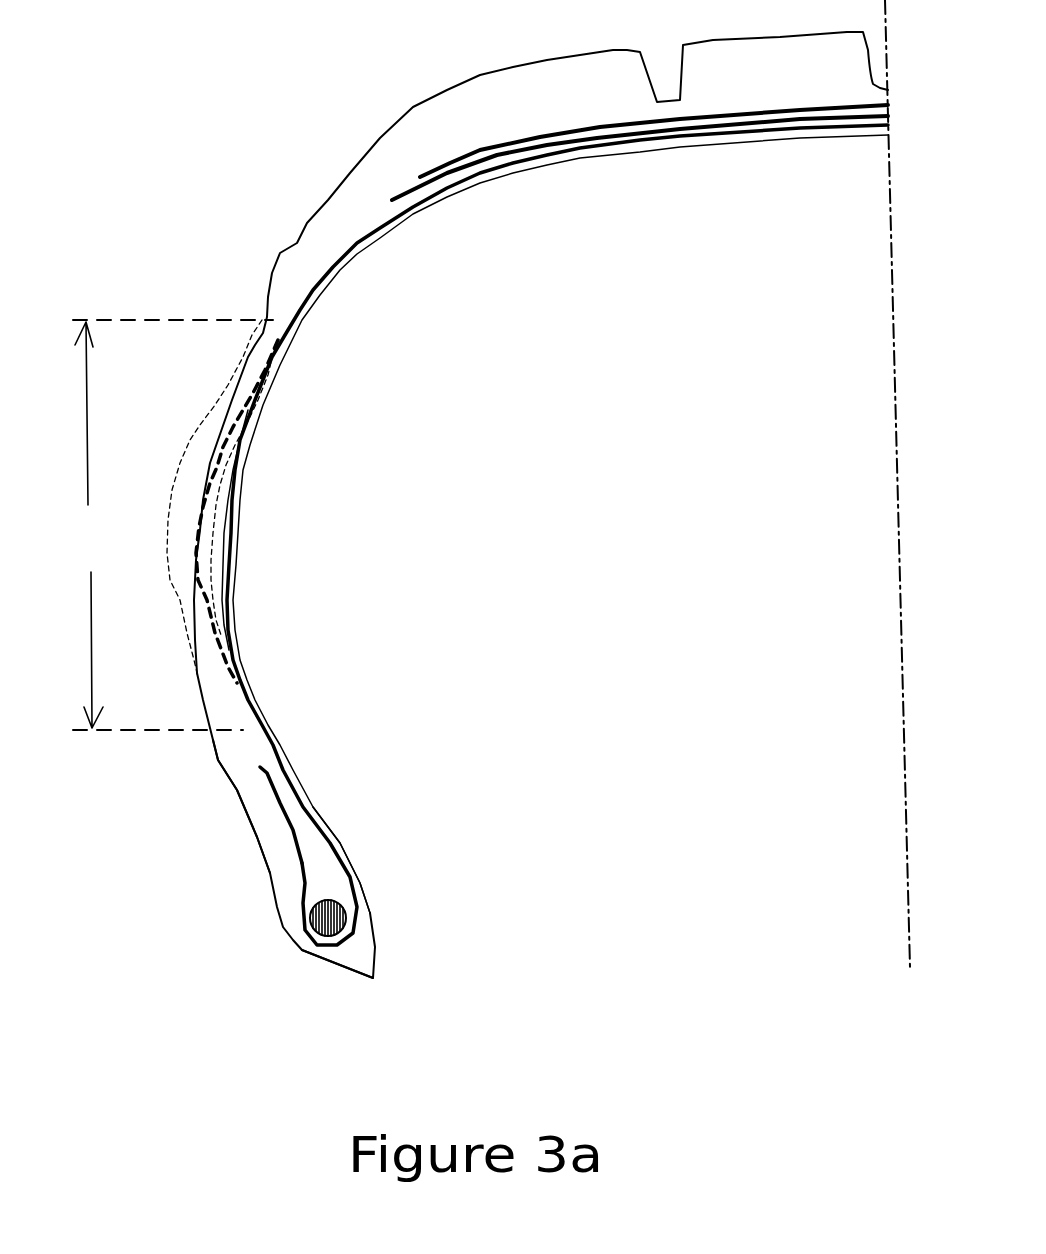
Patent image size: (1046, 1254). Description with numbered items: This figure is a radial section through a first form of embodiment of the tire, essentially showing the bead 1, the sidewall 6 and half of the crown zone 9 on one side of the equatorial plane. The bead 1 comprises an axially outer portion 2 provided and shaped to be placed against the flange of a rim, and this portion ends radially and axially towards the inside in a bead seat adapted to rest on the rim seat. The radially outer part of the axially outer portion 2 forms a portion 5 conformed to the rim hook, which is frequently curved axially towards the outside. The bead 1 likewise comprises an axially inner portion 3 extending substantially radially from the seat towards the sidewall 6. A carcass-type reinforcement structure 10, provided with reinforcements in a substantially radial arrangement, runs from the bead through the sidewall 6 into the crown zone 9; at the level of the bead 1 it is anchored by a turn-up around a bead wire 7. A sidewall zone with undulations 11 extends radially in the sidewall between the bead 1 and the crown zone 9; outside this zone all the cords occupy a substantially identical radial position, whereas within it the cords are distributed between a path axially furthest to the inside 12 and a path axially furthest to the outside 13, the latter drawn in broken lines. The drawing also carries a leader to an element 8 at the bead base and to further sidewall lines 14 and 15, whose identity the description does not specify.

The bead 1 is at (290, 927).
The axially outer portion 2 is at (287, 901).
The axially inner portion 3 is at (361, 886).
The portion conformed to the rim hook 5 is at (260, 850).
The sidewall 6 is at (221, 512).
The bead wire 7 is at (332, 919).
The bead base / chafer 8 is at (300, 950).
The crown zone 9 is at (620, 112).
The carcass-type reinforcement structure 10 is at (340, 255).
The sidewall zone with undulations 11 is at (173, 525).
The reinforcement structure path axially furthest to the inside 12 is at (236, 468).
The reinforcement structure path axially furthest to the outside 13 is at (203, 592).
The sidewall reinforcing layer 14 is at (252, 418).
The outer sidewall contour (alternative) 15 is at (197, 450).